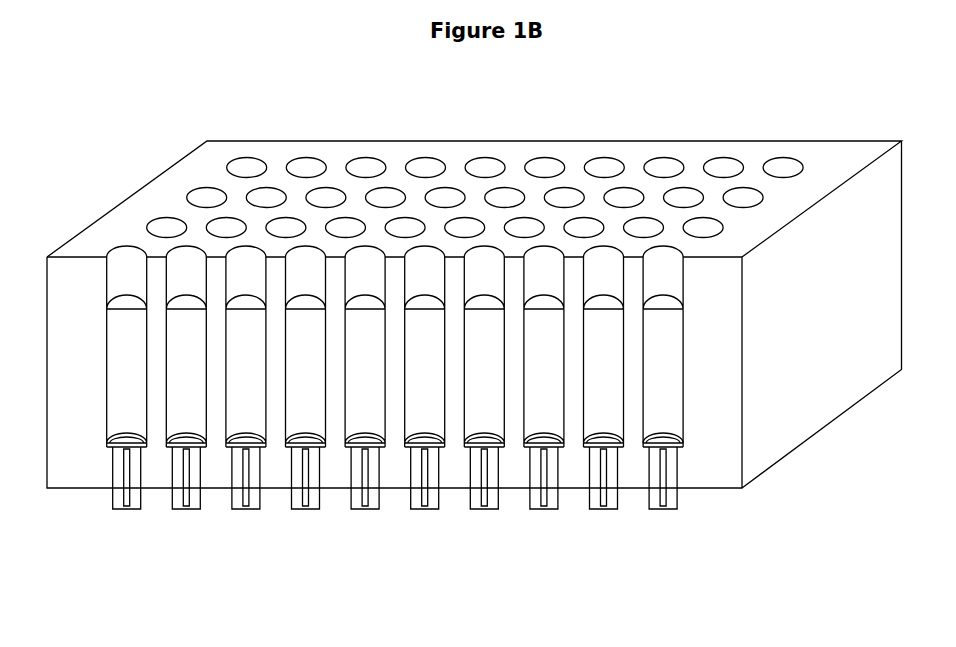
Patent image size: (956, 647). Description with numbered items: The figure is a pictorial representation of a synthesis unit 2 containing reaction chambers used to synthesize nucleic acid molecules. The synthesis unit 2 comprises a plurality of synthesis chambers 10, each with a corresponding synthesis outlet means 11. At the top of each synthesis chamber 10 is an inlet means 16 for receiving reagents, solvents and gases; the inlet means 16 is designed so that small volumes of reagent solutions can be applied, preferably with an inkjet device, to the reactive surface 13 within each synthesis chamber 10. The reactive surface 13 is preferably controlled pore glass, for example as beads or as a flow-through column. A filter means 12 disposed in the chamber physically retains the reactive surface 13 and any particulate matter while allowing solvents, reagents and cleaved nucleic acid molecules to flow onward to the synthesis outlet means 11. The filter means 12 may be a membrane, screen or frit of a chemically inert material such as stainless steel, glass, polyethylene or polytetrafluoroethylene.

The synthesis unit 2 is at (457, 358).
The synthesis chamber 10 is at (693, 277).
The synthesis outlet means 11 is at (682, 508).
The filter means 12 is at (687, 450).
The reactive surface 13 is at (475, 431).
The inlet means 16 is at (247, 165).